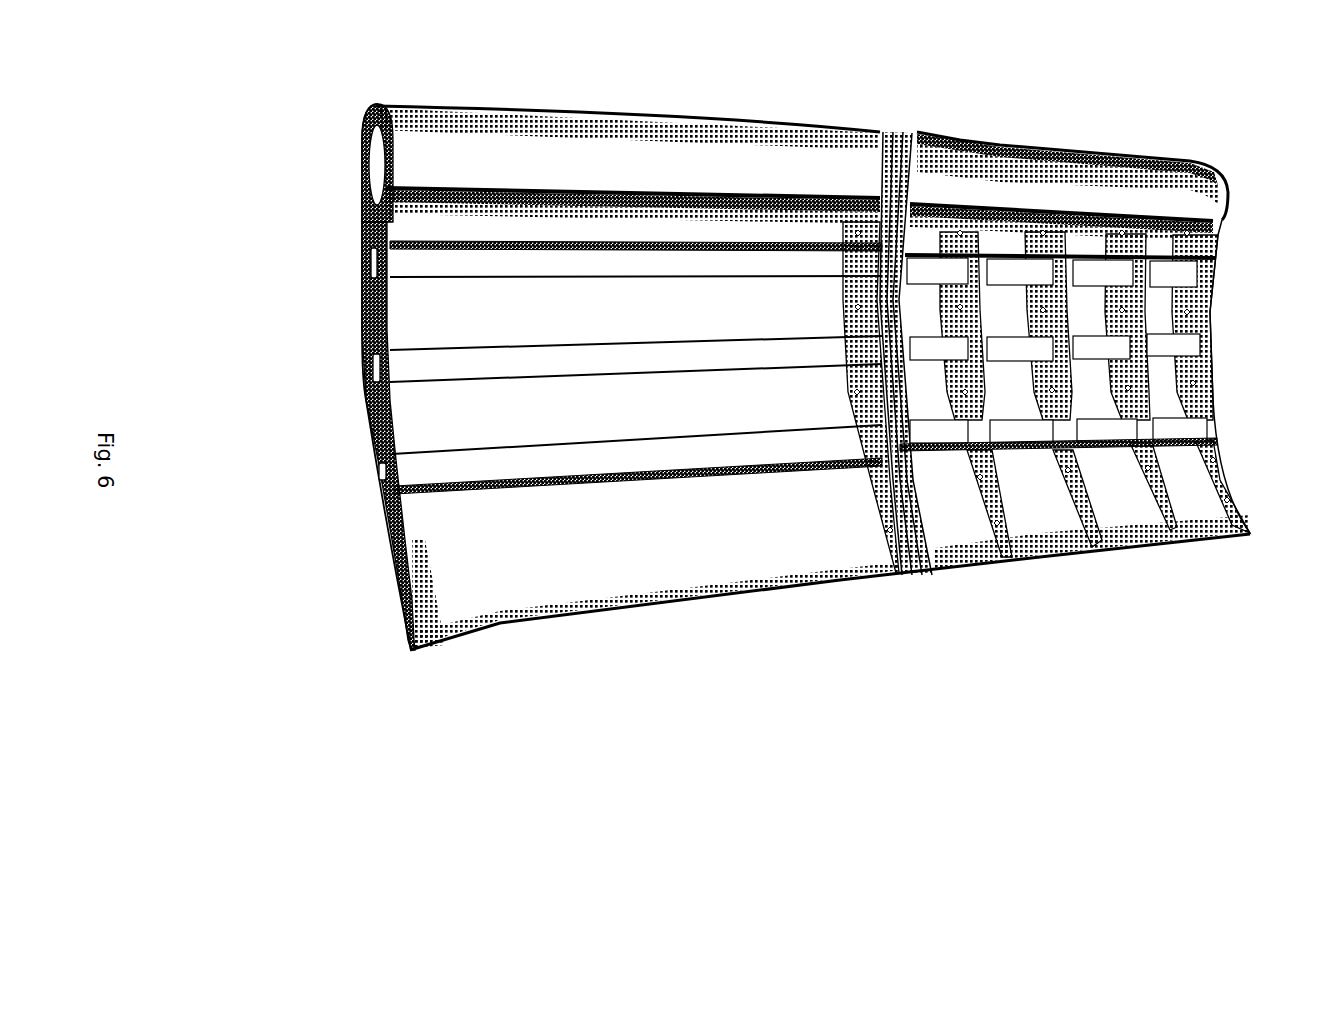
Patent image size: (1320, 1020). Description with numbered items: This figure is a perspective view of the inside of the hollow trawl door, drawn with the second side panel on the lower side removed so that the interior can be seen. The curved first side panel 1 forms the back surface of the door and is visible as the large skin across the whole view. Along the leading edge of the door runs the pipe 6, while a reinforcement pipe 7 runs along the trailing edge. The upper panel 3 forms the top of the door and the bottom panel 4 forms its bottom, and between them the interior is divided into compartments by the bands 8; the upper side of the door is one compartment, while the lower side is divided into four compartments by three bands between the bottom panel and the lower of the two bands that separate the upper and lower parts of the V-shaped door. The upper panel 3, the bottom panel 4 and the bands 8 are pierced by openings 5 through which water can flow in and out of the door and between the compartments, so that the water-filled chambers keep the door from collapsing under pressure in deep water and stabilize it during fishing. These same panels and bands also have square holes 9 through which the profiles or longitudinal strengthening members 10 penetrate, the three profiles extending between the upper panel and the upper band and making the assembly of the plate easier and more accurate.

The first side panel 1 is at (808, 540).
The upper panel 3 is at (368, 392).
The bottom panel 4 is at (1213, 297).
The openings 5 is at (372, 310).
The pipe 6 is at (418, 138).
The reinforcement pipe 7 is at (560, 627).
The bands 8 is at (1158, 483).
The square holes 9 is at (375, 483).
The longitudinal strengthening members 10 is at (578, 468).